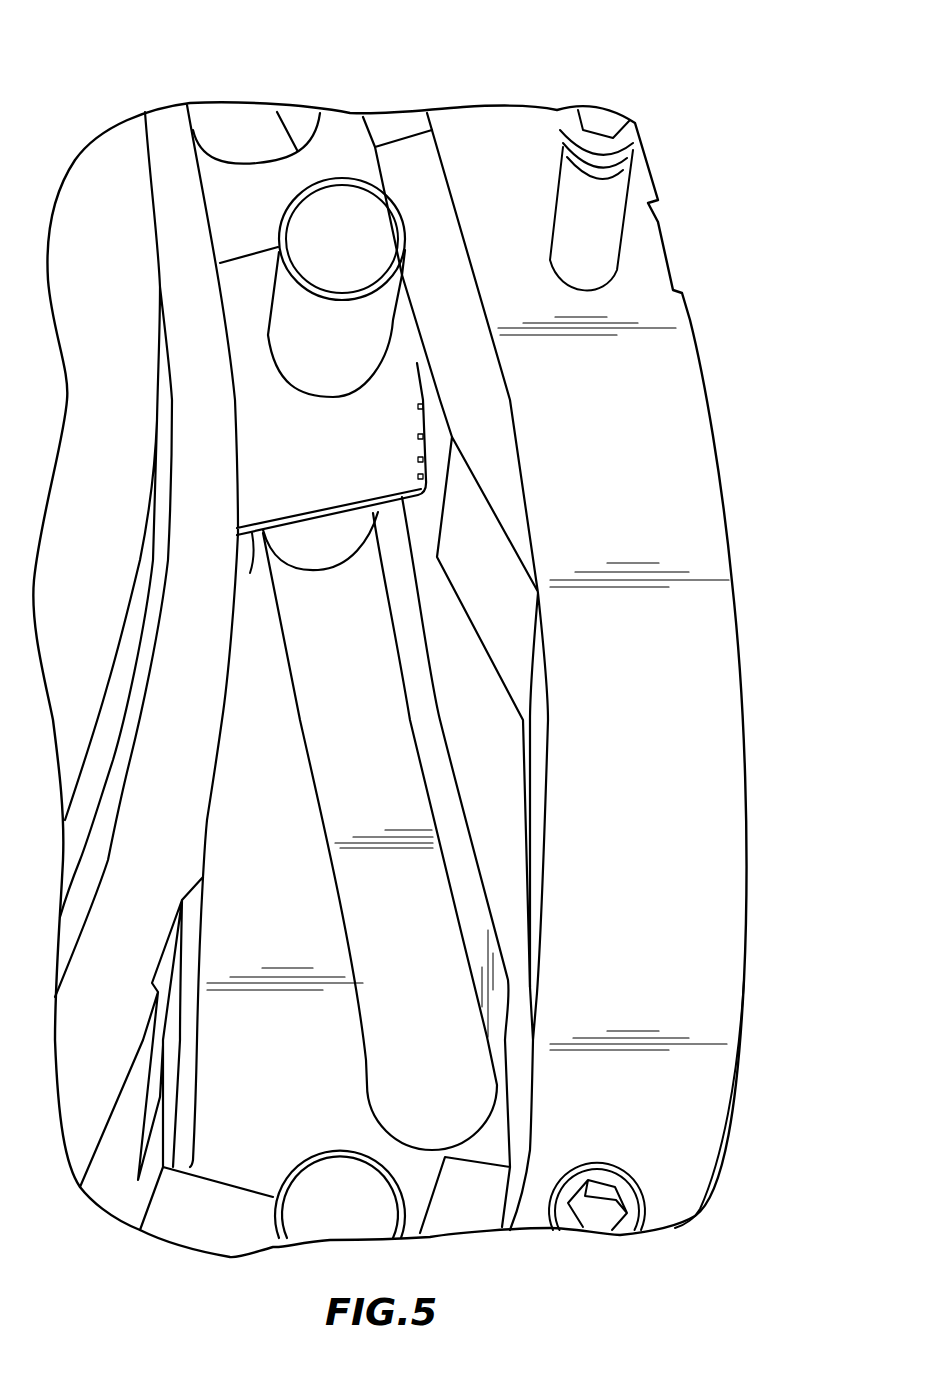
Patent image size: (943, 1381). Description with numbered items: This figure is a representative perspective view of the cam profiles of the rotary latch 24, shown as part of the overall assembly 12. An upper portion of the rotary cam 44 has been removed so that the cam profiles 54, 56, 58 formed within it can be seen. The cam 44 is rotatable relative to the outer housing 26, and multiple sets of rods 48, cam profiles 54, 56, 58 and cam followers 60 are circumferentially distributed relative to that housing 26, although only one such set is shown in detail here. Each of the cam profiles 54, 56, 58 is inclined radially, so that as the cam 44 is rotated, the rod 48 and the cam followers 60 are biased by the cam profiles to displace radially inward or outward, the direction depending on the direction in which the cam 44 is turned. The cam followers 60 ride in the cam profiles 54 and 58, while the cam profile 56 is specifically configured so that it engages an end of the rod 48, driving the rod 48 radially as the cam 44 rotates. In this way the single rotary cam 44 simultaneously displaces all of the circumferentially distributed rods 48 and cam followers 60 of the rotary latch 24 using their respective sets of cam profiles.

The wheel assembly 12 is at (672, 98).
The rotary latch 24 is at (733, 1193).
The outer housing 26 is at (212, 847).
The rotary cam 44 is at (716, 434).
The rod 48 is at (250, 573).
The cam profile 54 is at (340, 880).
The cam profile 56 is at (420, 410).
The cam profile 58 is at (425, 722).
The cam followers 60 is at (403, 212).